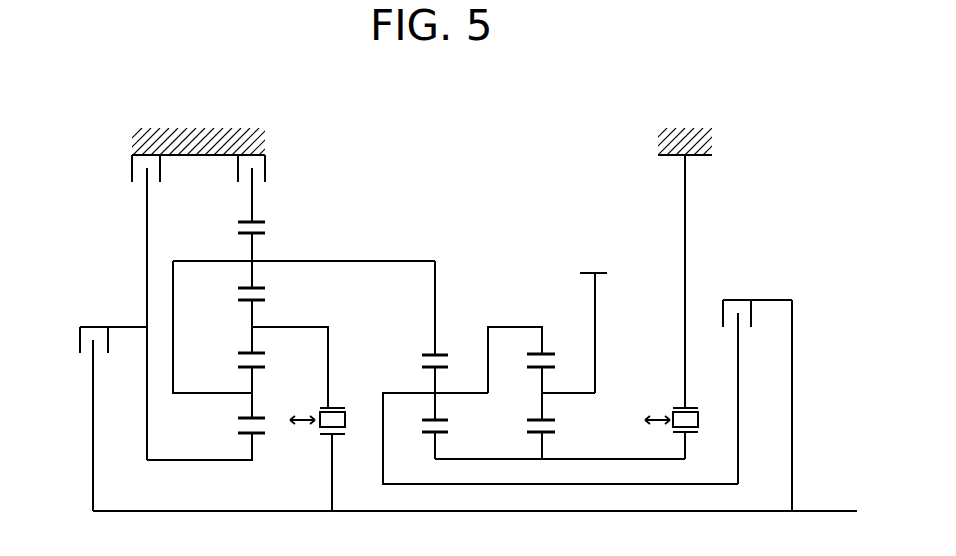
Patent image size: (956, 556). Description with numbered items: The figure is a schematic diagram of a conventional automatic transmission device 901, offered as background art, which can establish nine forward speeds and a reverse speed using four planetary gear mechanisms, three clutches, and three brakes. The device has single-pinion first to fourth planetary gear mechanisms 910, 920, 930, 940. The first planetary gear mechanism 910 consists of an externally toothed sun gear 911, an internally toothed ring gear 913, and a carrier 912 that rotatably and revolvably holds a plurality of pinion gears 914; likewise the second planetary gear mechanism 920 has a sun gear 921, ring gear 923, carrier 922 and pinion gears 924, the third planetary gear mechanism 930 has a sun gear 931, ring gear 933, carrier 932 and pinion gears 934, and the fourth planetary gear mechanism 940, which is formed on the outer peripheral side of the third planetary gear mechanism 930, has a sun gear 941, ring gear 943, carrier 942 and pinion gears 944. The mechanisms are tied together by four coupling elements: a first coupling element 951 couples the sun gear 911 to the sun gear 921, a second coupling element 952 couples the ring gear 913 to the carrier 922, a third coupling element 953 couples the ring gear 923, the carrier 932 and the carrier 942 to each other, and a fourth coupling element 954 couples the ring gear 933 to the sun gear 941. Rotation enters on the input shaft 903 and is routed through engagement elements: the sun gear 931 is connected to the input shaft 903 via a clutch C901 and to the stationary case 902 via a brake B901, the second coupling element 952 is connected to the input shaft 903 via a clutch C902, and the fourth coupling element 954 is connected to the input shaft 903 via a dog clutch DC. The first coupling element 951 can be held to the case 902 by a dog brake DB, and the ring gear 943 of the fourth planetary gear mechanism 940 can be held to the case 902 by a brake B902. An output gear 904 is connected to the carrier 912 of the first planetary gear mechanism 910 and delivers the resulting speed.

The automatic transmission device 901 is at (536, 113).
The case 902 is at (195, 153).
The input shaft 903 is at (820, 509).
The output gear 904 is at (587, 272).
The first planetary gear mechanism 910 is at (573, 344).
The sun gear 911 is at (554, 436).
The carrier 912 is at (572, 390).
The ring gear 913 is at (548, 352).
The pinion gears 914 is at (554, 420).
The second planetary gear mechanism 920 is at (551, 356).
The sun gear 921 is at (446, 436).
The carrier 922 is at (415, 392).
The ring gear 923 is at (433, 352).
The pinion gears 924 is at (446, 420).
The third planetary gear mechanism 930 is at (234, 412).
The sun gear 931 is at (241, 435).
The carrier 932 is at (238, 410).
The ring gear 933 is at (258, 353).
The pinion gears 934 is at (258, 416).
The fourth planetary gear mechanism 940 is at (304, 254).
The sun gear 941 is at (243, 301).
The carrier 942 is at (275, 259).
The ring gear 943 is at (250, 219).
The pinion gears 944 is at (248, 287).
The first coupling element 951 is at (500, 461).
The second coupling element 952 is at (488, 355).
The third coupling element 953 is at (172, 290).
The fourth coupling element 954 is at (244, 329).
The brake B901 is at (145, 150).
The brake B902 is at (253, 150).
The clutch C901 is at (87, 326).
The clutch C902 is at (734, 299).
The dog clutch DC is at (336, 400).
The dog brake DB is at (680, 406).